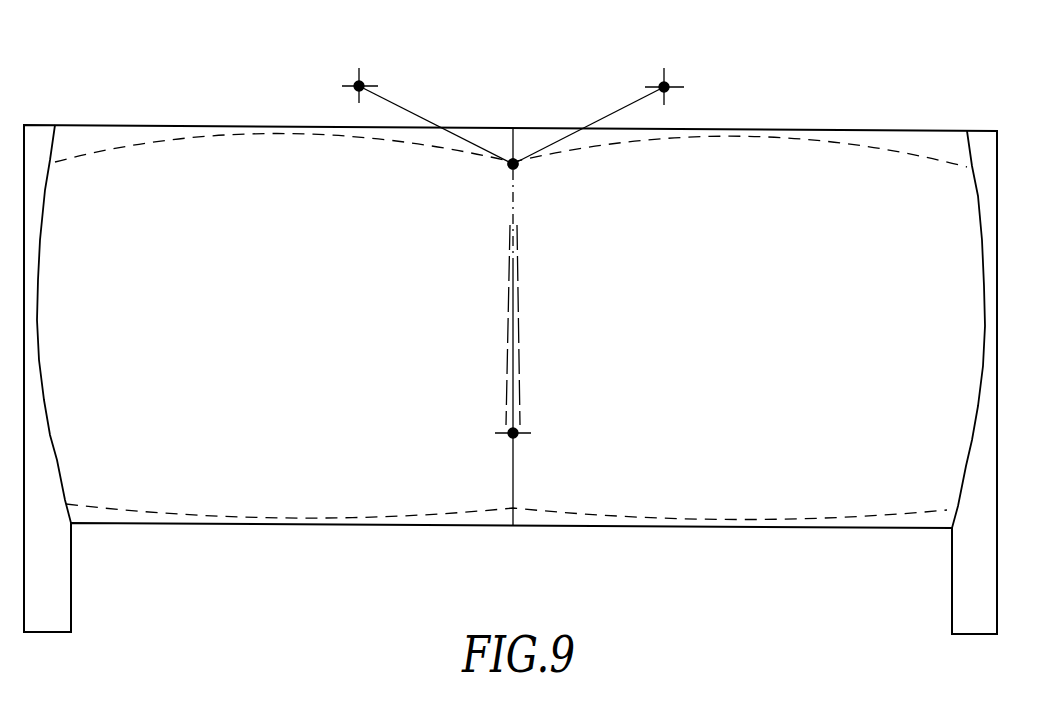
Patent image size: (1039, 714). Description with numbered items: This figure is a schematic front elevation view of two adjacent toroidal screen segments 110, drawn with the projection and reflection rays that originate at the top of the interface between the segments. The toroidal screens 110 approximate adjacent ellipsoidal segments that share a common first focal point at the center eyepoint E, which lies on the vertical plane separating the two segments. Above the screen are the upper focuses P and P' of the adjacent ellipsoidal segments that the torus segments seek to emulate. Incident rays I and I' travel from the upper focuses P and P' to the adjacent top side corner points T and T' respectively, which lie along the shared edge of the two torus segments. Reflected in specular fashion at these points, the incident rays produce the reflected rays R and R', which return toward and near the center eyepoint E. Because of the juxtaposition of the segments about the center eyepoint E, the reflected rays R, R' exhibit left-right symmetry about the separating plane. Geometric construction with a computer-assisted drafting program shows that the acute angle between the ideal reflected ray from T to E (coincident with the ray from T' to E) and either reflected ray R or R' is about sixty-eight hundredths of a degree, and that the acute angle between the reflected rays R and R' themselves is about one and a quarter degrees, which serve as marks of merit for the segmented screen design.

The toroidal screen 110 is at (210, 124).
The upper focus of adjacent ellipsoid segment P' is at (344, 55).
The upper focus of adjacent ellipsoid segment P is at (688, 71).
The incident ray I' is at (436, 117).
The incident ray I is at (588, 120).
The top side corner of adjacent torus segment T' is at (481, 181).
The top side corner of adjacent torus segment T is at (546, 185).
The reflected ray R is at (473, 325).
The reflected ray R' is at (556, 325).
The center eyepoint E is at (513, 449).